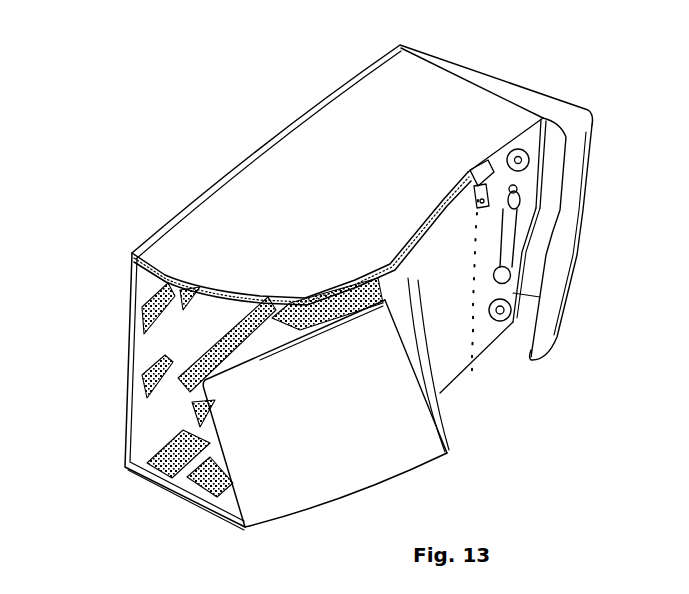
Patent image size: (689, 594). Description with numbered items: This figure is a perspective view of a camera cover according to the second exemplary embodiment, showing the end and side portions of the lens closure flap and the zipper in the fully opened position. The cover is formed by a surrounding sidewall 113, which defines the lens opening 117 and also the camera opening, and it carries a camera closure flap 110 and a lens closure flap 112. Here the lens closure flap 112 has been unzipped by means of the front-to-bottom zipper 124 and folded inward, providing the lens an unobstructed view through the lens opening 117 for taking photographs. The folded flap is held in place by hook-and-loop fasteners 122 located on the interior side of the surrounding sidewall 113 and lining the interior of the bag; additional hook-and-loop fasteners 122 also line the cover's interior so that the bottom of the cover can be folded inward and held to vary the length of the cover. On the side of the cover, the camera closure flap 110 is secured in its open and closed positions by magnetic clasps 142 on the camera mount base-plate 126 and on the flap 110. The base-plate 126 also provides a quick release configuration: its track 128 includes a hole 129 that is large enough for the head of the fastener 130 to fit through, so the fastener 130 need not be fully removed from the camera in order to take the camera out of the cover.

The camera closure flap 110 is at (545, 333).
The lens closure flap 112 is at (337, 445).
The surrounding sidewall 113 is at (298, 153).
The lens opening 117 is at (128, 273).
The hook-and-loop fasteners 122 is at (150, 322).
The front-to-bottom zipper 124 is at (447, 233).
The camera mount base-plate 126 is at (497, 172).
The track 128 is at (507, 244).
The hole 129 is at (507, 275).
The fastener 130 is at (520, 198).
The magnetic clasps 142 is at (510, 312).